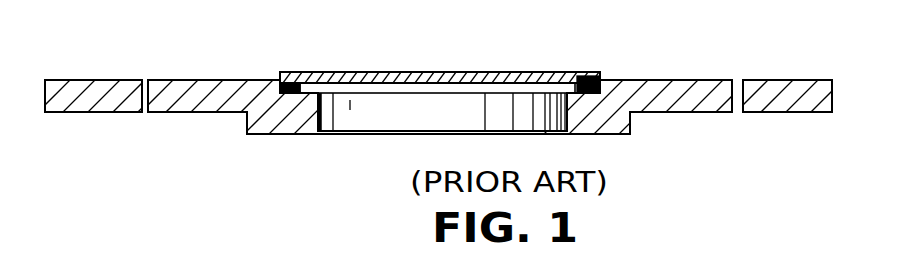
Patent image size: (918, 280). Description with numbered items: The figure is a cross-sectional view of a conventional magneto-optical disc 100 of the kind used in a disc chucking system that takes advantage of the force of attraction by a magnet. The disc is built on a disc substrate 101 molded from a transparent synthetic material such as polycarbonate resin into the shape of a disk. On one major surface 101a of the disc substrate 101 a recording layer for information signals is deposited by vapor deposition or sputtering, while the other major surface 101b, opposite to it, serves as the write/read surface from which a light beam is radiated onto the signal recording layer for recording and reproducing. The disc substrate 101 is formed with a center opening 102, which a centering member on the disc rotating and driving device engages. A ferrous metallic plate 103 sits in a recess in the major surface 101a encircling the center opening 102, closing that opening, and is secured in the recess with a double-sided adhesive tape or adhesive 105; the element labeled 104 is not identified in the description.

The magneto-optical disc 100 is at (797, 56).
The disc substrate 101 is at (70, 79).
The major surface 101a is at (117, 79).
The other major surface 101b is at (107, 113).
The center opening 102 is at (325, 112).
The ferrous metallic plate 103 is at (486, 72).
The seal 104 is at (598, 75).
The adhesive 105 is at (592, 74).